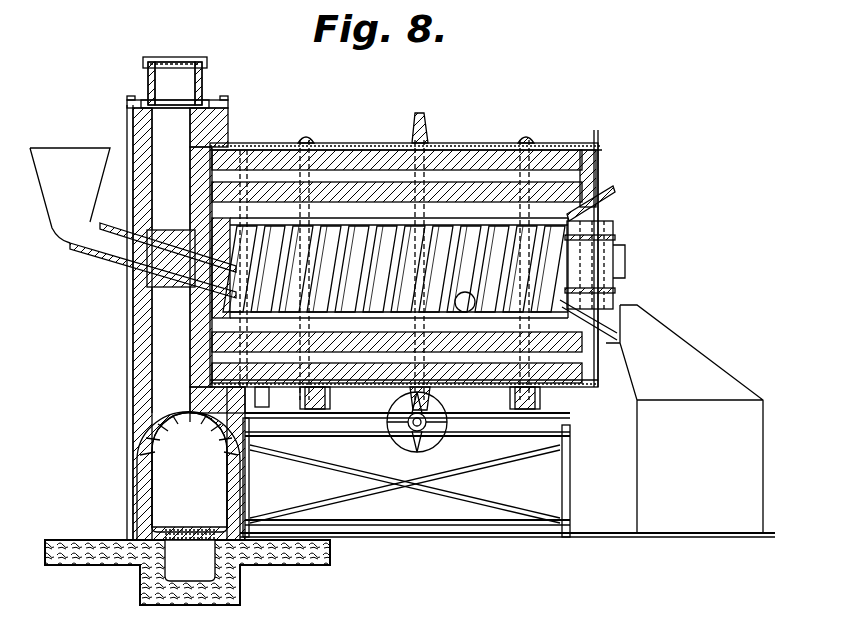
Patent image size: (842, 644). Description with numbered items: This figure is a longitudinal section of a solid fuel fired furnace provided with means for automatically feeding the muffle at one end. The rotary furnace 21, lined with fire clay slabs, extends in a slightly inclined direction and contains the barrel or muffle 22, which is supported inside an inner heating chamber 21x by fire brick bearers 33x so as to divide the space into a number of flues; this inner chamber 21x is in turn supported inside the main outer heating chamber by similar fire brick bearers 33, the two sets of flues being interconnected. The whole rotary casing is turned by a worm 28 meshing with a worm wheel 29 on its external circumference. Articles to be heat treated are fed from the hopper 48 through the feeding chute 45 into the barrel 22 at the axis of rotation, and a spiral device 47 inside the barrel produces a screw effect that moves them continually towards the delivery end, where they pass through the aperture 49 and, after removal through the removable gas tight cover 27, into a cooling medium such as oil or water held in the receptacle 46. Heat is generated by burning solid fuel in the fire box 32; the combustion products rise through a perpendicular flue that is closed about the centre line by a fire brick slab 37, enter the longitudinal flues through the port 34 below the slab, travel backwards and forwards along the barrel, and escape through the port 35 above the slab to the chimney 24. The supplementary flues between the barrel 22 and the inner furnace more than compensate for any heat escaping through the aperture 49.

The fire clay slabs / rotary furnace 21 is at (348, 157).
The inner heating chamber 21x is at (345, 338).
The barrel or muffle 22 is at (390, 277).
The chimney 24 is at (175, 82).
The removable gas tight cover or closure 27 is at (617, 218).
The worm 28 is at (440, 424).
The worm wheel 29 is at (422, 118).
The fire box 32 is at (188, 476).
The fire brick bearers 33 is at (465, 170).
The fire brick bearers (inner) 33x is at (268, 326).
The port (heat inlet port) 34 is at (205, 328).
The port (outlet port) 35 is at (193, 172).
The fire brick slab 37 is at (167, 288).
The feeding chute 45 is at (163, 255).
The receptacle 46 is at (684, 419).
The spiral device 47 is at (345, 250).
The hopper 48 is at (70, 195).
The aperture 49 is at (620, 298).